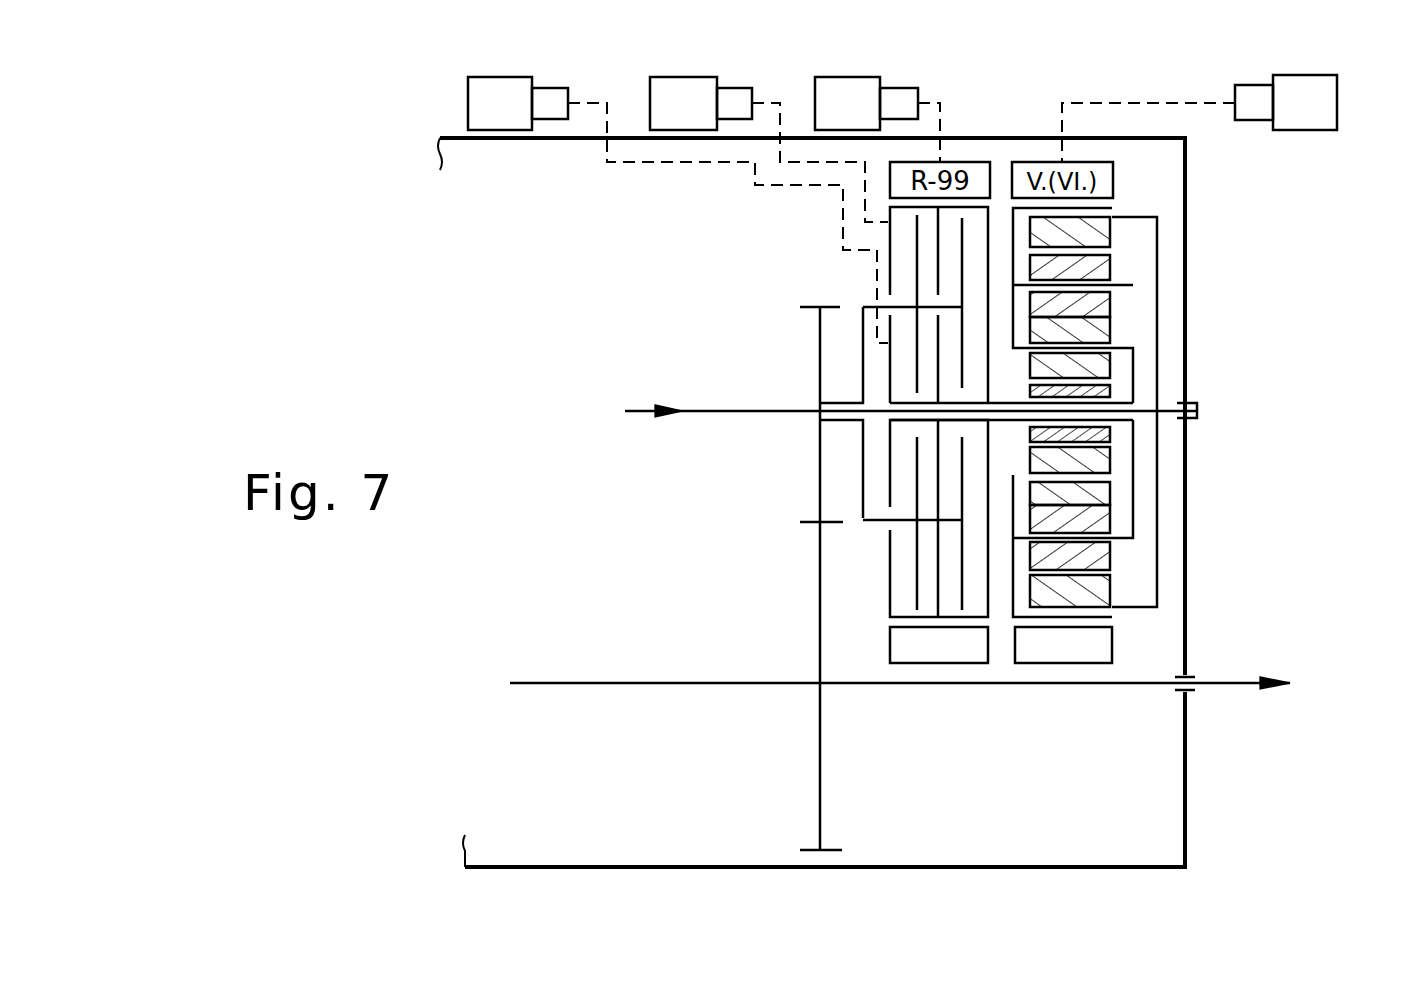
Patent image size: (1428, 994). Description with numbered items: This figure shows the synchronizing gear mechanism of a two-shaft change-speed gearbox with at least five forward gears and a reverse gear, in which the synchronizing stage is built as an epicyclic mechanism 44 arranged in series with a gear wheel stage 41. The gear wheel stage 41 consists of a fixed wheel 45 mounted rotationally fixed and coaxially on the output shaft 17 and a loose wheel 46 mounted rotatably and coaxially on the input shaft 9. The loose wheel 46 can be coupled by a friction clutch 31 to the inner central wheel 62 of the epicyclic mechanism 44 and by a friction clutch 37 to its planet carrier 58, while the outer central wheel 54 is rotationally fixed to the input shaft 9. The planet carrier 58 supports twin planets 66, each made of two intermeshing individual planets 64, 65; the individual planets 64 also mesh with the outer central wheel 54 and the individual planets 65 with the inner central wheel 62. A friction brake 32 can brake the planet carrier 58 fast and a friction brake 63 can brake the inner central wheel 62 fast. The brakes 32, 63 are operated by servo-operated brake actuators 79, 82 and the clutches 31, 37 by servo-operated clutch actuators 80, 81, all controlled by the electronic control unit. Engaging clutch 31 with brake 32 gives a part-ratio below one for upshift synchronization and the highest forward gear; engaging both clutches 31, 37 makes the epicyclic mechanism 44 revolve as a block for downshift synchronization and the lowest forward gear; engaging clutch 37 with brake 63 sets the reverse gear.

The input shaft 9 is at (701, 418).
The output shaft 17 is at (716, 688).
The friction clutch 31 is at (911, 575).
The friction brake 32 is at (1067, 665).
The friction clutch 37 is at (883, 498).
The gear wheel stage 41 is at (800, 298).
The epicyclic mechanism 44 is at (1178, 298).
The fixed wheel 45 is at (820, 762).
The loose wheel 46 is at (820, 460).
The outer central wheel 54 is at (1100, 225).
The planet carrier 58 is at (1135, 370).
The inner central wheel 62 is at (1112, 390).
The friction brake 63 is at (947, 665).
The individual planet 64 is at (1097, 268).
The individual planet 65 is at (1100, 465).
The twin planets 66 is at (1123, 508).
The brake actuator 79 is at (1319, 133).
The clutch actuator 80 is at (675, 145).
The clutch actuator 81 is at (491, 145).
The brake actuator 82 is at (923, 87).